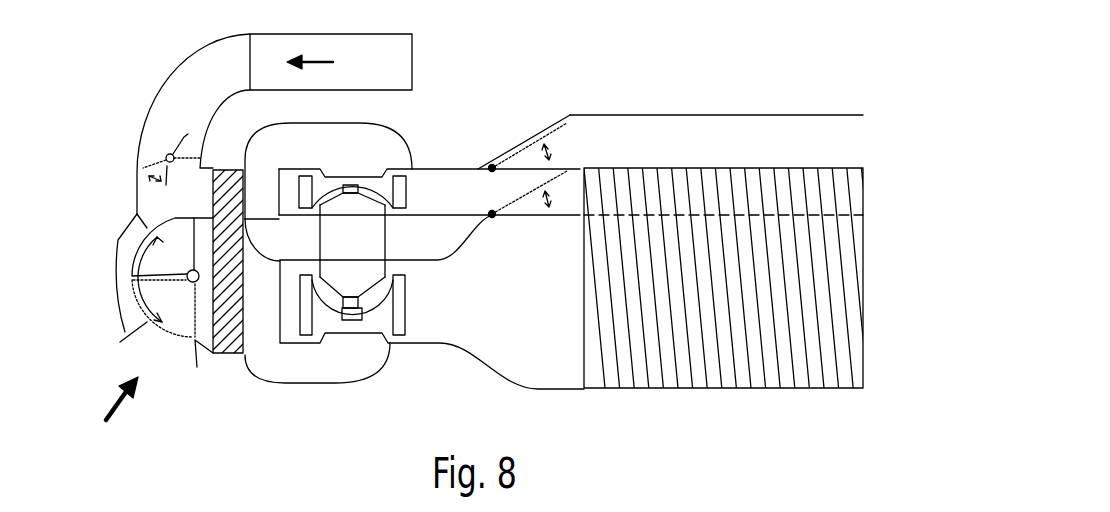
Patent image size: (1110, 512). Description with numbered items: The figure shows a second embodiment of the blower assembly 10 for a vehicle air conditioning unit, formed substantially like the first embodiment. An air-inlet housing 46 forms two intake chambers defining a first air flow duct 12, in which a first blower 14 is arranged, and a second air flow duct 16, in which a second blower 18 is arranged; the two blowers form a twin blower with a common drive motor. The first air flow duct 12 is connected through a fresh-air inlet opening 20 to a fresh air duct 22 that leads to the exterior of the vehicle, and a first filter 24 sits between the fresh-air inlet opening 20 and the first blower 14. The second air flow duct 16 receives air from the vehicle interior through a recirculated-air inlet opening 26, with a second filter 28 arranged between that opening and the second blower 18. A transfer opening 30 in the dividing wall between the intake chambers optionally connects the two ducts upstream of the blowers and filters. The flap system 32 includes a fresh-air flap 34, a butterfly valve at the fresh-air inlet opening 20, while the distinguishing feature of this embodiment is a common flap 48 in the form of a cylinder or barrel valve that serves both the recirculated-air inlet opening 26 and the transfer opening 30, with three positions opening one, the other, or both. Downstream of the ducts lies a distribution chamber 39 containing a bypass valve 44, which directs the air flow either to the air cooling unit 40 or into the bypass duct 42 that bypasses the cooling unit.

The blower assembly 10 is at (755, 68).
The first air flow duct 12 is at (363, 142).
The first blower 14 is at (398, 190).
The second air flow duct 16 is at (358, 363).
The second blower 18 is at (402, 317).
The fresh-air inlet opening 20 is at (167, 153).
The fresh air duct 22 is at (205, 90).
The first filter 24 is at (233, 190).
The recirculated-air inlet opening 26 is at (170, 367).
The second filter 28 is at (230, 290).
The transfer opening 30 is at (163, 217).
The flap system 32 is at (103, 186).
The fresh-air flap 34 is at (184, 137).
The distribution chamber 39 is at (553, 335).
The air cooling unit 40 is at (717, 343).
The bypass duct 42 is at (648, 132).
The bypass valve 44 is at (538, 214).
The air-inlet housing 46 is at (118, 322).
The common flap 48 is at (117, 252).